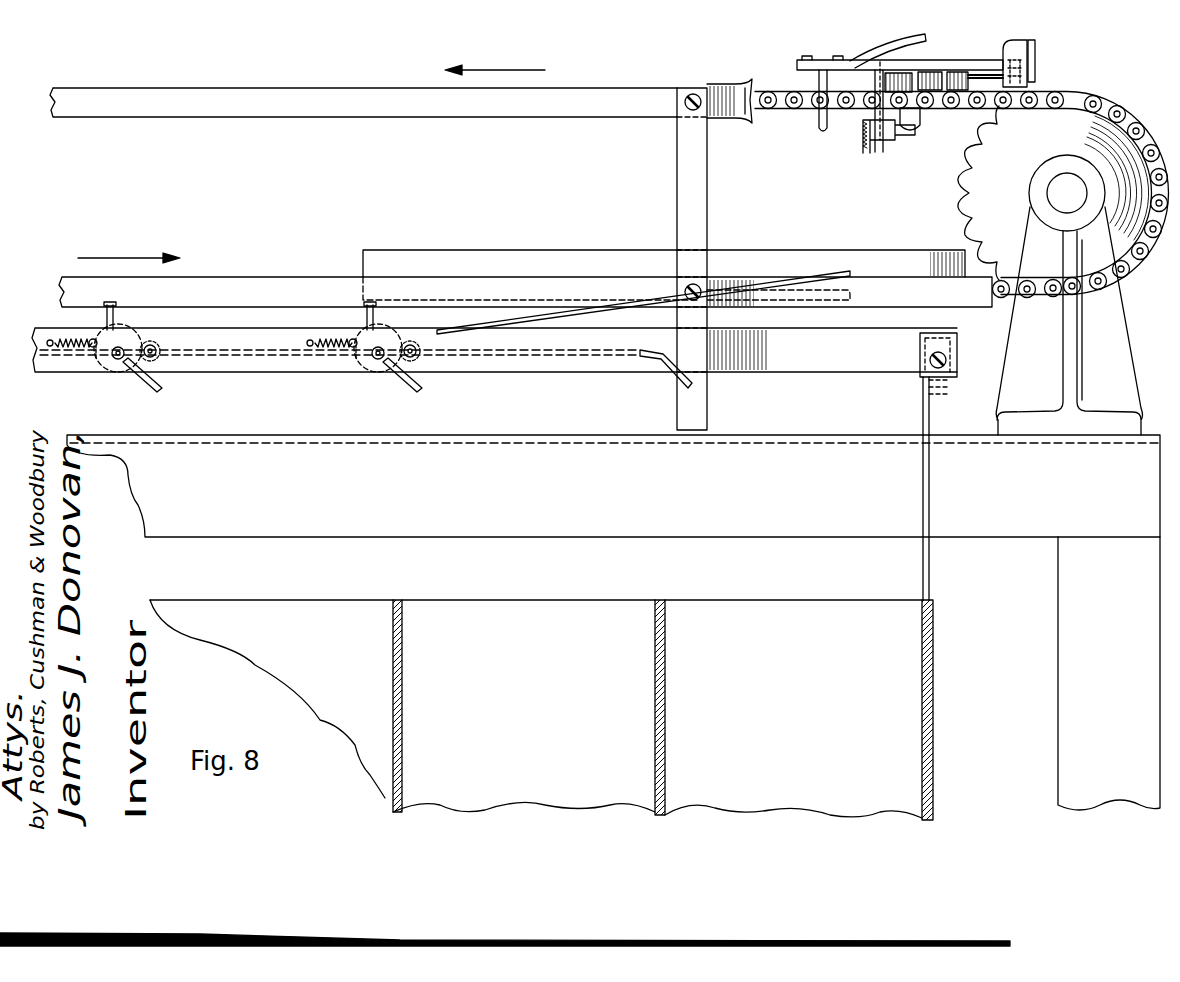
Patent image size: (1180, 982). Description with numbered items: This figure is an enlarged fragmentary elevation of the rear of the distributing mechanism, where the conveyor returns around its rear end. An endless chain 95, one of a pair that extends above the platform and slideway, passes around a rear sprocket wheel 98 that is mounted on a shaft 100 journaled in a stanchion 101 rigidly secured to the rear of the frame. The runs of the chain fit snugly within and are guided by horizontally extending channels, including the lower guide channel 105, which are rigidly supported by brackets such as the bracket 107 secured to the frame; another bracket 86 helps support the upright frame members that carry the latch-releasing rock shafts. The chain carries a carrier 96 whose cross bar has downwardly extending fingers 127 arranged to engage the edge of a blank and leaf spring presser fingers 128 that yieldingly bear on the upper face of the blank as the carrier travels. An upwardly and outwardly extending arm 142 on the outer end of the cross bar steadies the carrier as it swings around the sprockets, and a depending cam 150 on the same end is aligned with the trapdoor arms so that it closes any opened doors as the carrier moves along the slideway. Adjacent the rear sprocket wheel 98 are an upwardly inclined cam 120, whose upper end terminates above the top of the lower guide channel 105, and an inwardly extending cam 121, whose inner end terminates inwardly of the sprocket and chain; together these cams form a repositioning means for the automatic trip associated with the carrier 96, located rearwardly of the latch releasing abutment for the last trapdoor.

The bracket 86 is at (690, 400).
The endless chain 95 is at (791, 121).
The carrier 96 is at (793, 50).
The rear sprocket wheel 98 is at (965, 200).
The shaft 100 is at (1089, 178).
The stanchion 101 is at (1100, 302).
The lower guide channel 105 is at (560, 93).
The bracket 107 is at (697, 212).
The upwardly inclined cam 120 is at (487, 320).
The inwardly extending cam 121 is at (798, 252).
The downwardly extending finger 127 is at (1040, 52).
The leaf spring presser finger 128 is at (905, 48).
The upwardly and outwardly extending arm 142 is at (823, 130).
The depending cam 150 is at (1012, 55).